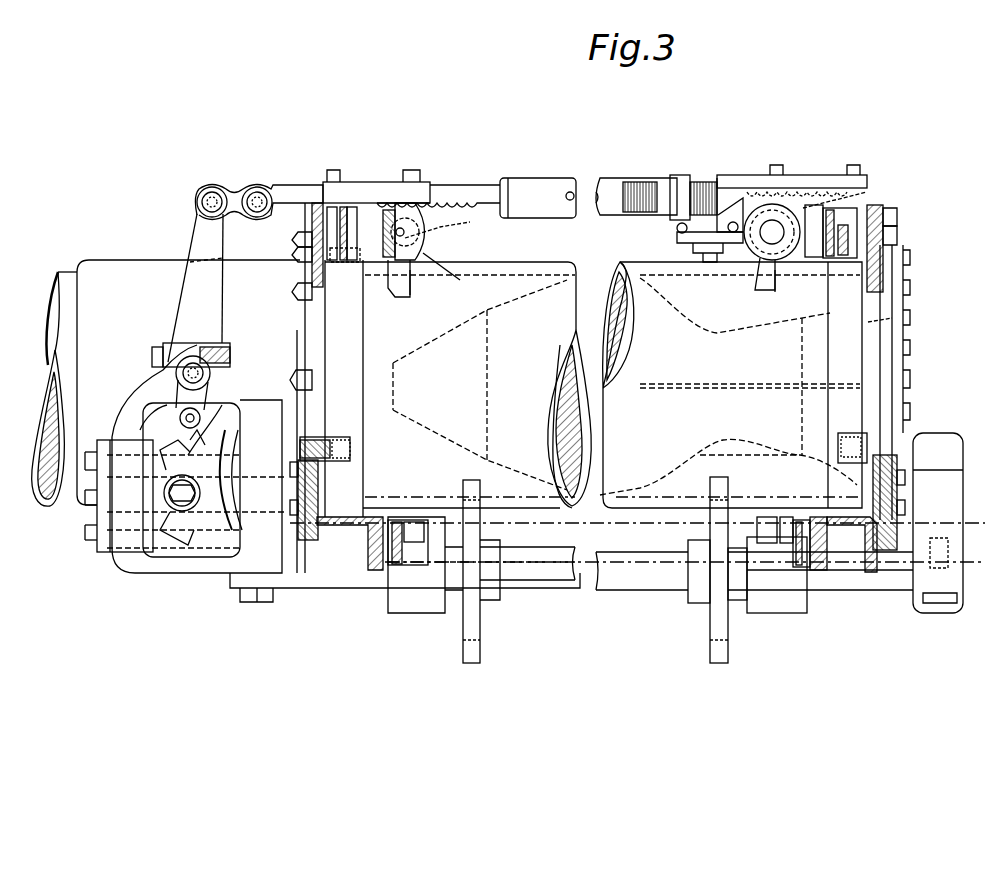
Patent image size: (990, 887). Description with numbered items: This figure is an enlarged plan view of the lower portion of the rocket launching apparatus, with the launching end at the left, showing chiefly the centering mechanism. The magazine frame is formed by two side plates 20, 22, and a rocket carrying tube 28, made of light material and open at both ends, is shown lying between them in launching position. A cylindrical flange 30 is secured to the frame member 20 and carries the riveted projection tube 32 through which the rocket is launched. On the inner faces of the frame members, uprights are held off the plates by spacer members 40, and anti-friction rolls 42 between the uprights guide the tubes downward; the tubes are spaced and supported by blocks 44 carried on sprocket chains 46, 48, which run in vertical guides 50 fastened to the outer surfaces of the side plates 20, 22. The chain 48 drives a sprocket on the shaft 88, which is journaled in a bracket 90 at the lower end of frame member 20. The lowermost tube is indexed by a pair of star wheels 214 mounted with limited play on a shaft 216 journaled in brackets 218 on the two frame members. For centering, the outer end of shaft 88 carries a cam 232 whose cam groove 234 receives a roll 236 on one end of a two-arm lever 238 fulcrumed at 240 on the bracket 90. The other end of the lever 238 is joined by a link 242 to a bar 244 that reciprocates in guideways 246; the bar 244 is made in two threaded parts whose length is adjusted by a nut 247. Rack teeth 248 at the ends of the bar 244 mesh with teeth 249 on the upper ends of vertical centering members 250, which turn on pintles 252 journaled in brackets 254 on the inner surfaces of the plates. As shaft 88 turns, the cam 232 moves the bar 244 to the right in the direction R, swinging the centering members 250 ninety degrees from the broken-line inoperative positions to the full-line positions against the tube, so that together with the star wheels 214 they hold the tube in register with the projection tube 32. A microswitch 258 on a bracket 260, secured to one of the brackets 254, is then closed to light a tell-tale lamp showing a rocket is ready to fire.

The side plate 20 is at (318, 340).
The side plate 22 is at (880, 400).
The rocket carrying tube 28 is at (515, 274).
The cylindrical flange 30 is at (104, 262).
The projection tube 32 is at (58, 272).
The spacer member 40 is at (316, 203).
The anti-friction roll 42 is at (350, 262).
The block 44 is at (342, 444).
The sprocket chain 46 is at (900, 460).
The sprocket chain 48 is at (312, 440).
The vertical guide 50 is at (296, 480).
The shaft 88 is at (262, 515).
The bracket 90 is at (300, 330).
The star wheel 214 is at (480, 652).
The shaft 216 is at (626, 580).
The bracket 218 is at (352, 584).
The cam 232 is at (222, 532).
The cam groove 234 is at (228, 425).
The roll 236 is at (238, 472).
The two-arm lever 238 is at (215, 244).
The fulcrum 240 is at (198, 375).
The link 242 is at (240, 180).
The bar 244 is at (500, 178).
The guideway 246 is at (355, 192).
The nut 247 is at (684, 178).
The rack teeth 248 is at (455, 224).
The teeth 249 is at (412, 232).
The centering member 250 is at (432, 250).
The pintle 252 is at (420, 212).
The bracket 254 is at (452, 280).
The microswitch 258 is at (708, 262).
The bracket 260 is at (735, 178).
The reference direction R is at (892, 320).